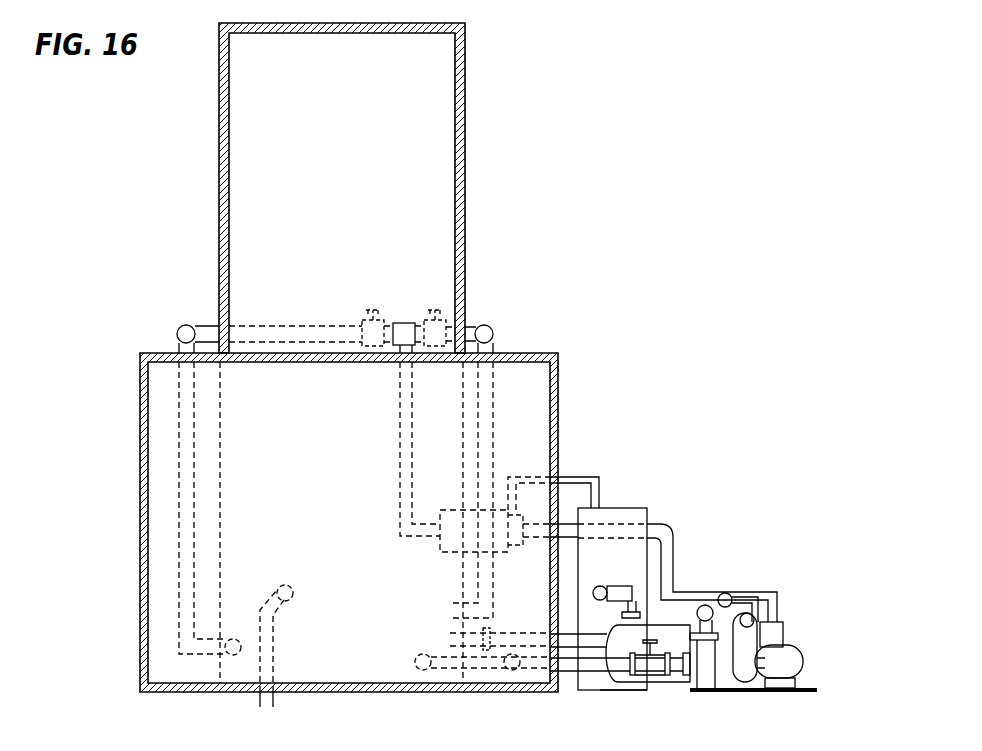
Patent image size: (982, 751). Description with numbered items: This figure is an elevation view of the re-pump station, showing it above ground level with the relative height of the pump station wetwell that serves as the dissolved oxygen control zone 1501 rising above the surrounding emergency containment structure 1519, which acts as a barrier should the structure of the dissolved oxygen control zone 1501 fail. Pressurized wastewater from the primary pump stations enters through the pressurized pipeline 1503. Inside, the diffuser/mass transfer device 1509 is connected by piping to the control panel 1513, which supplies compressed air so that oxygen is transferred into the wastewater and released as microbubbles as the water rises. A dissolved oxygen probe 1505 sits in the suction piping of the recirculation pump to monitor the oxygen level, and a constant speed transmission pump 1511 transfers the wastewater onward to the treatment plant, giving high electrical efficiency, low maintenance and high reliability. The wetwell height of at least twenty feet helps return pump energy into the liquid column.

The dissolved oxygen control zone 1501 is at (432, 178).
The emergency containment structure 1519 is at (135, 508).
The diffuser/mass transfer device 1509 is at (437, 554).
The pressurized pipeline 1503 is at (278, 647).
The control panel 1513 is at (626, 562).
The dissolved oxygen probe 1505 is at (782, 625).
The constant speed transmission pump 1511 is at (790, 655).